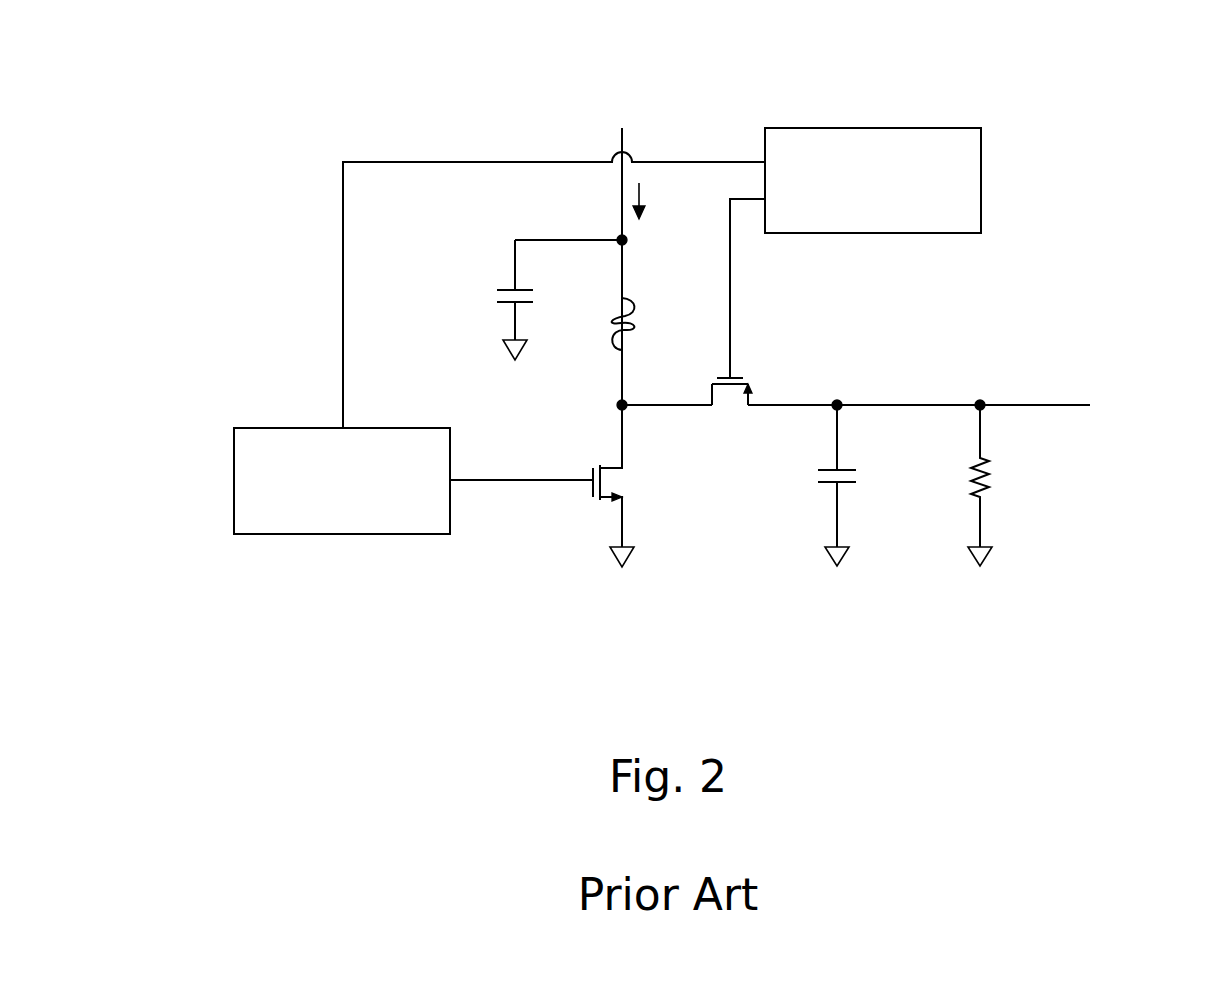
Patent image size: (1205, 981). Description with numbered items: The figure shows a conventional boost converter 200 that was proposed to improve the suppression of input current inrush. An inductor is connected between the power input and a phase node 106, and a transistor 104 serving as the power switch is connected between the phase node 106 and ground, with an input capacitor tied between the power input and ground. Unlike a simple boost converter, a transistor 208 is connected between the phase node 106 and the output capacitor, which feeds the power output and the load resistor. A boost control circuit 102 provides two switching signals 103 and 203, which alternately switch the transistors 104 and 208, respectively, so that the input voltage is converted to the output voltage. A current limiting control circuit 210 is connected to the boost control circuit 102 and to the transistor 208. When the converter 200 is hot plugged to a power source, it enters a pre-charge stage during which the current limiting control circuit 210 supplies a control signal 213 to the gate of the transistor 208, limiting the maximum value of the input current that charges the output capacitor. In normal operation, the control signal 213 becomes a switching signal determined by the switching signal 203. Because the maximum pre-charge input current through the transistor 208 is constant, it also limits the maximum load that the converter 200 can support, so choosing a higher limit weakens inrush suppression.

The conventional boost converter 200 is at (1119, 118).
The current limiting control circuit 210 is at (872, 128).
The switching signal 203 is at (407, 163).
The boost control circuit 102 is at (283, 428).
The switching signal 103 is at (533, 482).
The transistor 104 is at (633, 483).
The phase node 106 is at (617, 405).
The control signal 213 is at (730, 313).
The transistor 208 is at (756, 381).